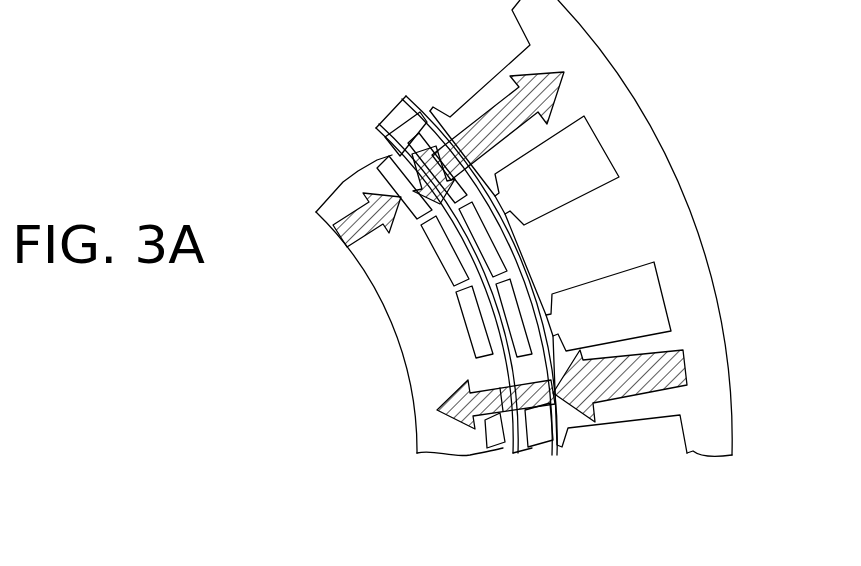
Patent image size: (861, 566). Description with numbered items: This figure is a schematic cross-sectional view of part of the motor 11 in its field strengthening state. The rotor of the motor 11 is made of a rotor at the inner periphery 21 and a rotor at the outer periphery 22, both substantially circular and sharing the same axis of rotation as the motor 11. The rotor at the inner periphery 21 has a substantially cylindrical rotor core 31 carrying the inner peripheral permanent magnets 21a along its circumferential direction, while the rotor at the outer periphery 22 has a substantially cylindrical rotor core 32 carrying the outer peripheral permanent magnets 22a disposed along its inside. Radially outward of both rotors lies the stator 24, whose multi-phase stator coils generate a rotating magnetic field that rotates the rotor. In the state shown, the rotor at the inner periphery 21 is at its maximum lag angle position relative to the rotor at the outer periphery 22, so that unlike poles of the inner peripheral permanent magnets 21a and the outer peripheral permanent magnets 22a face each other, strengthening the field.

The motor 11 is at (740, 160).
The stator 24 is at (694, 252).
The rotor at the inner periphery 21 is at (392, 258).
The inner peripheral permanent magnet 21a is at (458, 283).
The rotor at the outer periphery 22 is at (512, 224).
The outer peripheral permanent magnet 22a is at (500, 262).
The rotor core 31 is at (464, 450).
The rotor core 32 is at (522, 450).